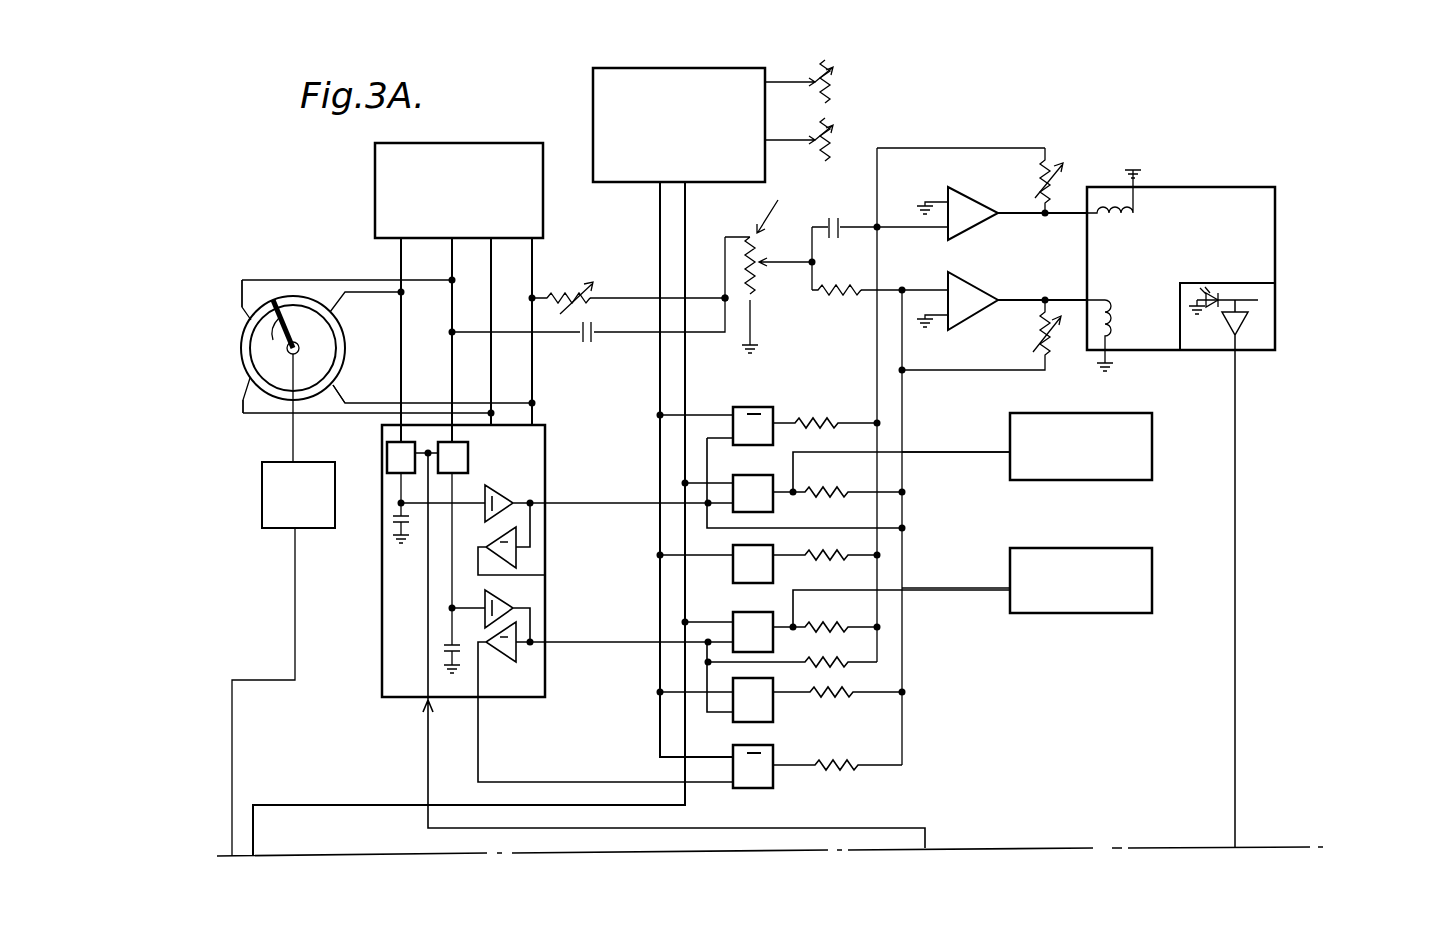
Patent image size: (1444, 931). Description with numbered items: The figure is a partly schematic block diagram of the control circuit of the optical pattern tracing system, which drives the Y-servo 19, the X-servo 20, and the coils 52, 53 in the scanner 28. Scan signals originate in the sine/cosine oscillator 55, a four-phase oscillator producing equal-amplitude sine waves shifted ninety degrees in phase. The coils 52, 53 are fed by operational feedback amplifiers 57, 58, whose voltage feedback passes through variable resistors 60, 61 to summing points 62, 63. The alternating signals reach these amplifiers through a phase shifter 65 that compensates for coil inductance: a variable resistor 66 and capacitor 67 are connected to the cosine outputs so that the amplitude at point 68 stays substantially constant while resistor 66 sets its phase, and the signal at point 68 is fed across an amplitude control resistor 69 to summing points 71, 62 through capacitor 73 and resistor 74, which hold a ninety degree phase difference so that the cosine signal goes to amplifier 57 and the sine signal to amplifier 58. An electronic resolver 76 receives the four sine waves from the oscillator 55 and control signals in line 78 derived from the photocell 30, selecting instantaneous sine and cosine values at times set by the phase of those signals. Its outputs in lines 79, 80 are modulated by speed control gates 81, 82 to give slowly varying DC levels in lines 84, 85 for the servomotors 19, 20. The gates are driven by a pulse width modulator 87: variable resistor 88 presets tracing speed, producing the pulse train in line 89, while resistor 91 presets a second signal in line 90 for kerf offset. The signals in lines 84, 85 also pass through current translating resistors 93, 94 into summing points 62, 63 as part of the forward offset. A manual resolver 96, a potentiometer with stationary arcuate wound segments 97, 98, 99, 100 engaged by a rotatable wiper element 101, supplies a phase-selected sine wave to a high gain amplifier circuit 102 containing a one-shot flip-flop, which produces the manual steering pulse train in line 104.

The Y-servo 19 is at (1152, 462).
The X-servo 20 is at (1152, 585).
The scanner 28 is at (1196, 187).
The photocell 30 is at (1268, 357).
The coil 52 is at (1105, 204).
The coil 53 is at (1120, 325).
The sine/cosine oscillator 55 is at (495, 142).
The operational feedback amplifier 57 is at (980, 197).
The operational feedback amplifier 58 is at (985, 288).
The variable resistor 60 is at (1053, 160).
The variable resistor 61 is at (1030, 338).
The summing point 62 is at (880, 220).
The summing point 63 is at (902, 288).
The phase shifter 65 is at (776, 206).
The variable resistor 66 is at (600, 298).
The capacitor 67 is at (588, 342).
The point 68 is at (722, 295).
The amplitude control resistor 69 is at (754, 252).
The summing point 71 is at (816, 262).
The capacitor 73 is at (836, 211).
The resistor 74 is at (842, 296).
The electronic resolver 76 is at (382, 600).
The line 78 is at (428, 750).
The line 79 is at (555, 495).
The line 80 is at (560, 637).
The speed control gate 81 is at (745, 458).
The speed control gate 82 is at (738, 612).
The line 84 is at (930, 458).
The line 85 is at (937, 594).
The pulse width modulator 87 is at (593, 100).
The variable resistor 88 is at (842, 138).
The line 89 is at (685, 204).
The line 90 is at (658, 220).
The resistor 91 is at (840, 82).
The current translating resistor 93 is at (838, 462).
The current translating resistor 94 is at (838, 602).
The manual resolver 96 is at (322, 268).
The stationary arcuate wound segment 97 is at (345, 326).
The stationary arcuate wound segment 98 is at (254, 293).
The stationary arcuate wound segment 99 is at (249, 390).
The stationary arcuate wound segment 100 is at (332, 402).
The rotatable wiper element 101 is at (270, 402).
The high gain amplifier circuit 102 is at (263, 535).
The line 104 is at (295, 641).